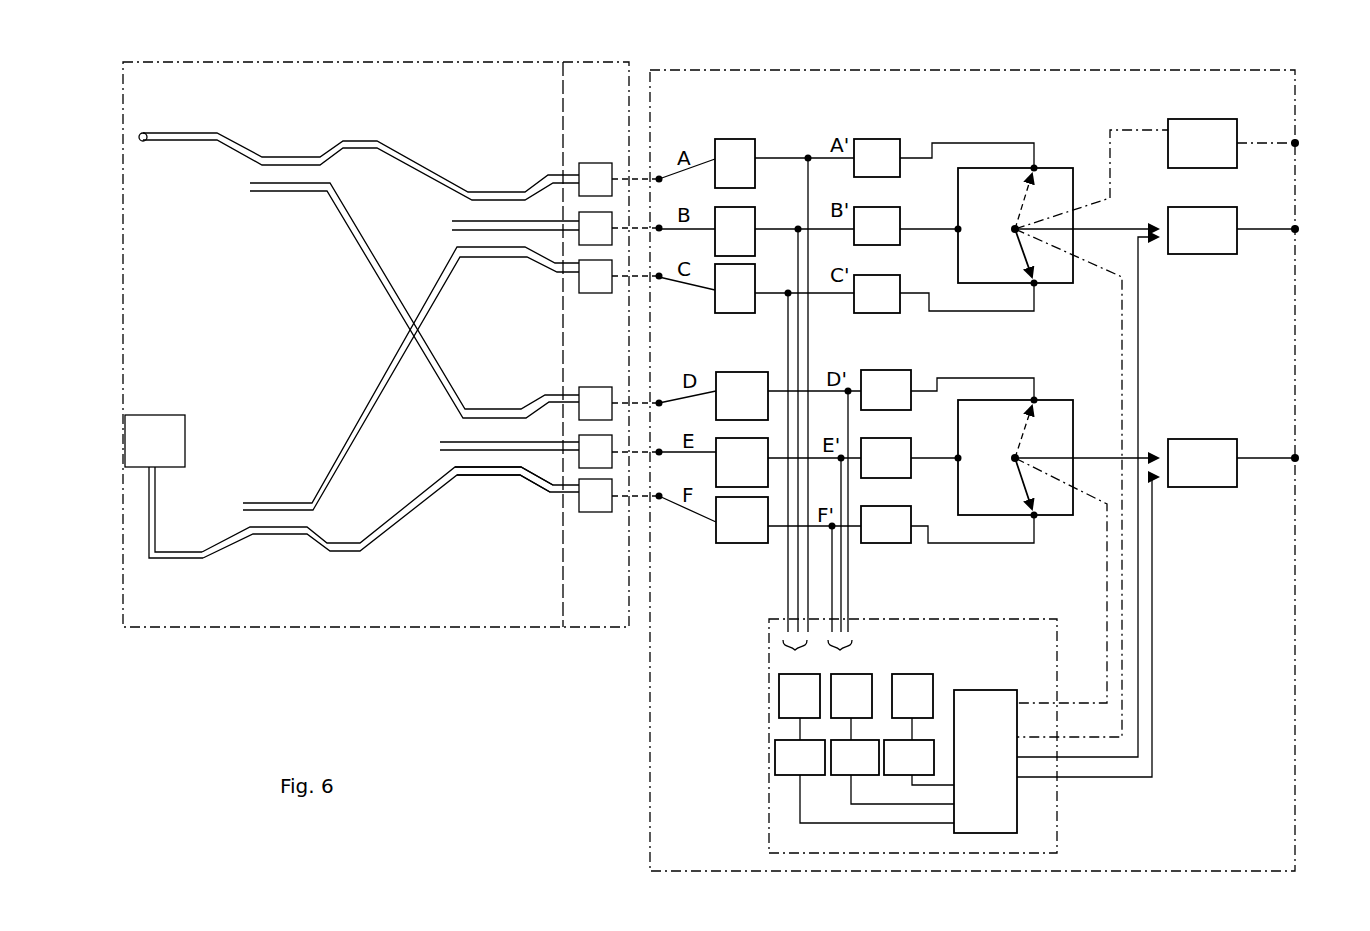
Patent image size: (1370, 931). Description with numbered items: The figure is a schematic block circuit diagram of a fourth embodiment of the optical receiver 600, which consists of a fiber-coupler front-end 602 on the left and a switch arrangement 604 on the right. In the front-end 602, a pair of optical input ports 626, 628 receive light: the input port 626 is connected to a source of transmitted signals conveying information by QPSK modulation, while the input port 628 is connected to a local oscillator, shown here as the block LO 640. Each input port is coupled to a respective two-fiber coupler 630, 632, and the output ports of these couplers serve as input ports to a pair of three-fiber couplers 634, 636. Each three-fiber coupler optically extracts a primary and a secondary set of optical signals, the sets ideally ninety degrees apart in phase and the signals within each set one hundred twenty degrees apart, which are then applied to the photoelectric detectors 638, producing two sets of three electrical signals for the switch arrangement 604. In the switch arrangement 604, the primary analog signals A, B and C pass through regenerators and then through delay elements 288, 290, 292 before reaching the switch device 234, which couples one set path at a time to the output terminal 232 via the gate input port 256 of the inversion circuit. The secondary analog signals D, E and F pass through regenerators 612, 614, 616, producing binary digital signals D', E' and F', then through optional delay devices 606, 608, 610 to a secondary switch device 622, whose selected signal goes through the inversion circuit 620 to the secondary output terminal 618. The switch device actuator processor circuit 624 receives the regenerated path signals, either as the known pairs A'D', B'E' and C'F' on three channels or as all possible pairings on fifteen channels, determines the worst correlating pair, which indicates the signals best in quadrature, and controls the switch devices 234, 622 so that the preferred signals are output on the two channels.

The optical receiver 600 is at (369, 673).
The front-end 602 is at (266, 60).
The switch arrangement 604 is at (995, 52).
The delay device 606 is at (947, 390).
The delay device 608 is at (909, 458).
The delay device 610 is at (947, 524).
The regenerator 612 is at (742, 396).
The regenerator 614 is at (742, 462).
The regenerator 616 is at (742, 520).
The secondary output terminal 618 is at (1291, 456).
The inversion circuit 620 is at (1127, 608).
The secondary switch device 622 is at (1062, 400).
The switch device actuator processor circuit 624 is at (913, 736).
The optical input port 626 is at (143, 131).
The optical input port 628 is at (150, 560).
The two-fiber coupler 630 is at (287, 157).
The two-fiber coupler 632 is at (283, 537).
The three-fiber coupler 634 is at (501, 192).
The three-fiber coupler 636 is at (480, 473).
The photoelectric detectors 638 is at (595, 62).
The local oscillator 640 is at (157, 414).
The output terminal 232 is at (1290, 230).
The switch device 234 is at (1052, 168).
The gate input port 256 is at (1127, 482).
The delay element 288 is at (944, 158).
The delay element 290 is at (906, 226).
The delay element 292 is at (944, 294).